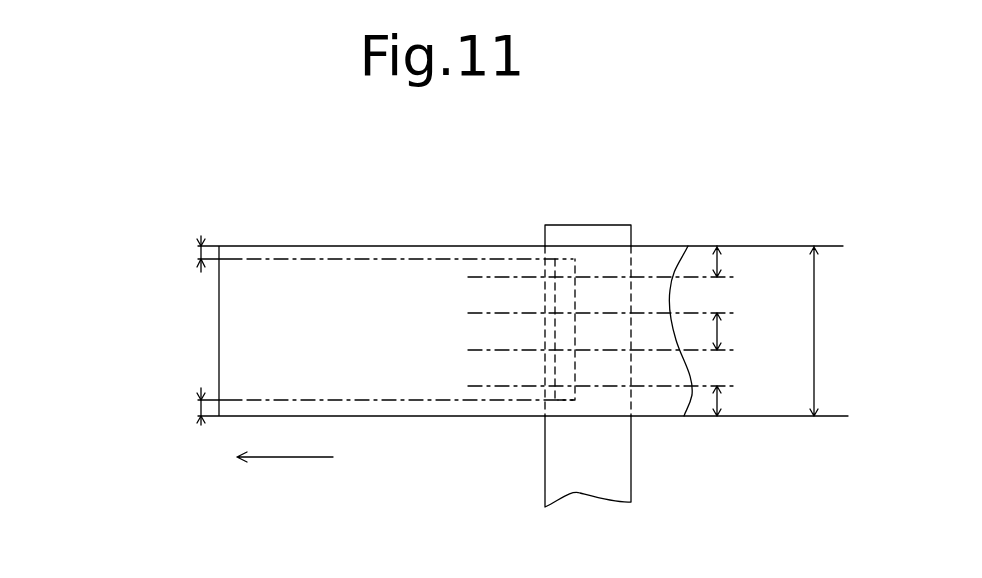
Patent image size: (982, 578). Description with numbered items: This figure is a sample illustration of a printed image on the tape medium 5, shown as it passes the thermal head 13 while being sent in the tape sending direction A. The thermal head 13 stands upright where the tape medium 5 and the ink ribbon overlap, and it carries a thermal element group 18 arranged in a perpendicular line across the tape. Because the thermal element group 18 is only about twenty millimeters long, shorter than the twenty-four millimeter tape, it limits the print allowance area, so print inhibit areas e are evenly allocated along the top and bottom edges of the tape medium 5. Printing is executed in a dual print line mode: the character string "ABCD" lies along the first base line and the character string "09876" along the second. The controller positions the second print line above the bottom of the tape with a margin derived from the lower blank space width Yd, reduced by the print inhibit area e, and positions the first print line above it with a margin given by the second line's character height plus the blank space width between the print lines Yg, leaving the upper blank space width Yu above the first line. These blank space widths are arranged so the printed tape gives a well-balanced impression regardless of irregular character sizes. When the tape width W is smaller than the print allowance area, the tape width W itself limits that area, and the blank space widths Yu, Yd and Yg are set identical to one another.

The tape medium 5 is at (358, 242).
The thermal head 13 is at (586, 225).
The thermal element group 18 is at (556, 366).
The print inhibit area e is at (200, 252).
The tape sending direction A is at (292, 457).
The upper blank space width Yu is at (718, 262).
The blank space width between the print lines Yg is at (740, 332).
The lower blank space width Yd is at (718, 400).
The tape width W is at (818, 331).